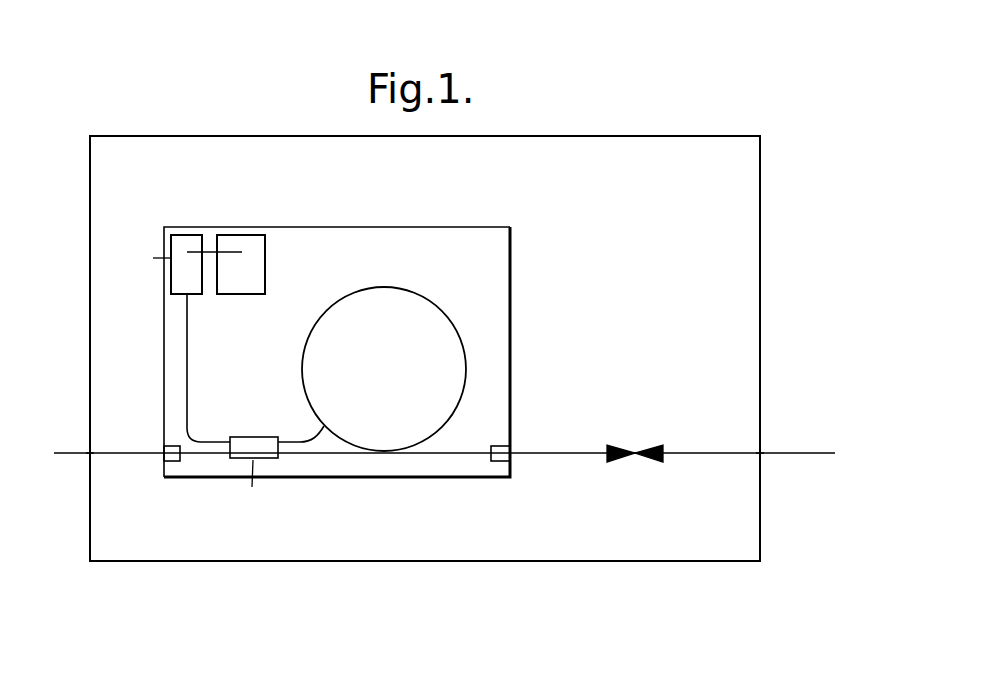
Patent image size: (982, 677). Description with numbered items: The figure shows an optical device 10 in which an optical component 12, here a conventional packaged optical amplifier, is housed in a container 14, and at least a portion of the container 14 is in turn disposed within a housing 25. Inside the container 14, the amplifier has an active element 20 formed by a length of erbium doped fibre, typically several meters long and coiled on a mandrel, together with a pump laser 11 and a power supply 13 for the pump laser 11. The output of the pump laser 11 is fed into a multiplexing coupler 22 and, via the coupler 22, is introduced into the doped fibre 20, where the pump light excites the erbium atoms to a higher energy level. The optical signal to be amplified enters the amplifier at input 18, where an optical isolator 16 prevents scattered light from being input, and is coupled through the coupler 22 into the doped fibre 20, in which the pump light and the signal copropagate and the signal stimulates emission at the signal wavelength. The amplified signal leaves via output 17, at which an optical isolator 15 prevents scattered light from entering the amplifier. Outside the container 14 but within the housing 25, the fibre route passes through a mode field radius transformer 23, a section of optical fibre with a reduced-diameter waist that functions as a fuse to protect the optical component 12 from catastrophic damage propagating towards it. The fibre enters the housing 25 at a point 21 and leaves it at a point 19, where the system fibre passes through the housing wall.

The optical device 10 is at (513, 580).
The pump laser 11 is at (187, 233).
The optical component 12 is at (345, 298).
The power supply 13 is at (243, 233).
The container 14 is at (419, 225).
The optical isolator 15 is at (502, 447).
The optical isolator 16 is at (173, 445).
The output 17 is at (548, 457).
The input 18 is at (122, 457).
The fiber exit port 19 is at (762, 452).
The active element 20 is at (432, 298).
The fiber entry port 21 is at (90, 452).
The multiplexing coupler 22 is at (253, 438).
The mode field radius transformer 23 is at (653, 462).
The housing 25 is at (760, 182).